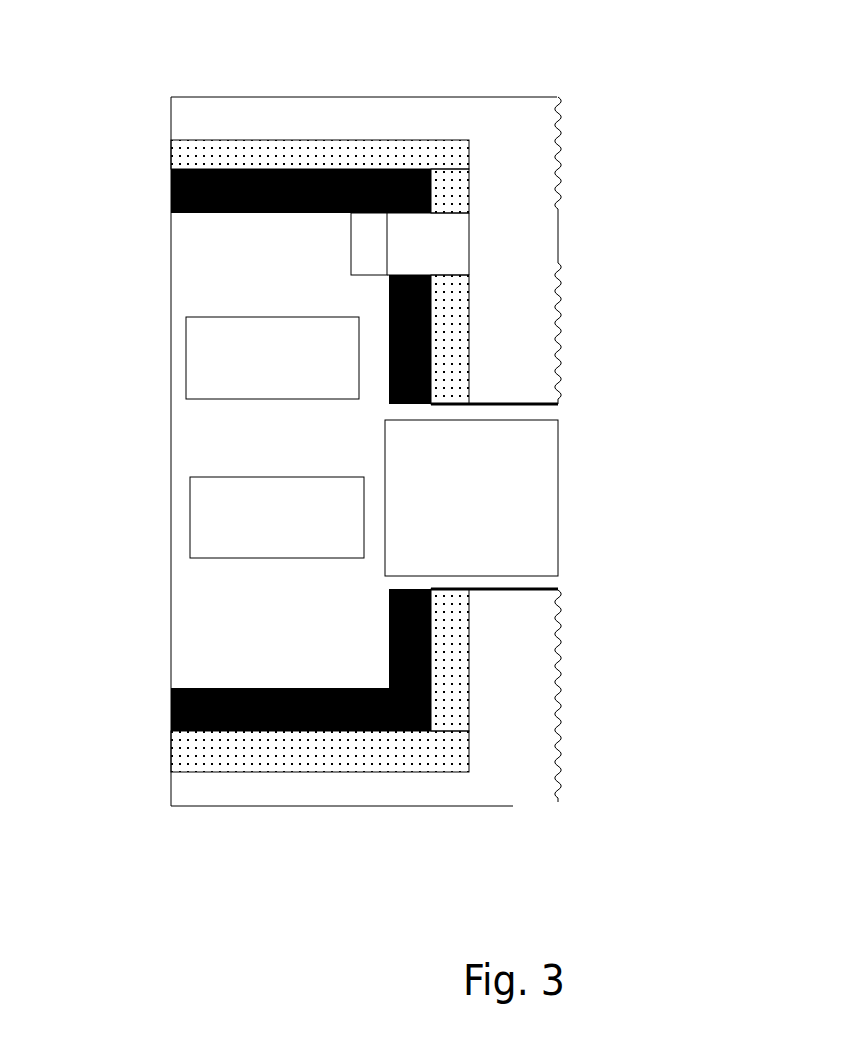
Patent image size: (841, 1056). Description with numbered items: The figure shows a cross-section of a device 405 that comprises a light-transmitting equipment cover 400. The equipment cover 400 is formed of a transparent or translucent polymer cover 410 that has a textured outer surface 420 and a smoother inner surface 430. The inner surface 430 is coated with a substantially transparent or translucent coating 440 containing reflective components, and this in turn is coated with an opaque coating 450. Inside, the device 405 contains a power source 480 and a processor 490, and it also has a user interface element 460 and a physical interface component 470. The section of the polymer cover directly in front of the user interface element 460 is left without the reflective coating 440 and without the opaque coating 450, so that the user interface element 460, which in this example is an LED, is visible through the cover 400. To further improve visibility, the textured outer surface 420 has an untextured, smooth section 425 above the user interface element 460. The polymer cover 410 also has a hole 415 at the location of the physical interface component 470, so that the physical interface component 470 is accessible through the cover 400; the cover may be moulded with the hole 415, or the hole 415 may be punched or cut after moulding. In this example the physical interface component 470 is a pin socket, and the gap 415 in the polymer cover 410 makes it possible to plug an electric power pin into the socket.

The light-transmitting equipment cover 400 is at (572, 683).
The device 405 is at (170, 628).
The polymer cover 410 is at (523, 122).
The hole 415 is at (558, 410).
The textured outer surface 420 is at (557, 170).
The smooth section 425 is at (558, 263).
The inner surface 430 is at (469, 759).
The transparent/translucent coating 440 is at (453, 152).
The opaque coating 450 is at (393, 168).
The user interface element 460 is at (359, 242).
The physical interface component 470 is at (383, 456).
The power source 480 is at (194, 522).
The processor 490 is at (189, 362).